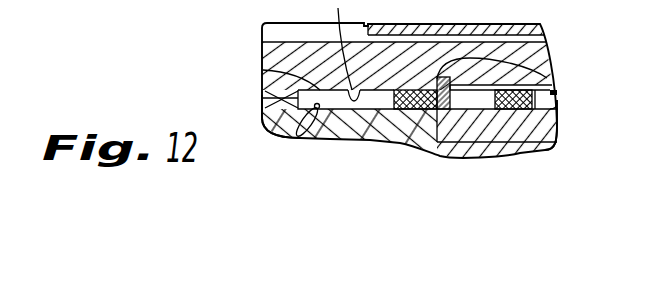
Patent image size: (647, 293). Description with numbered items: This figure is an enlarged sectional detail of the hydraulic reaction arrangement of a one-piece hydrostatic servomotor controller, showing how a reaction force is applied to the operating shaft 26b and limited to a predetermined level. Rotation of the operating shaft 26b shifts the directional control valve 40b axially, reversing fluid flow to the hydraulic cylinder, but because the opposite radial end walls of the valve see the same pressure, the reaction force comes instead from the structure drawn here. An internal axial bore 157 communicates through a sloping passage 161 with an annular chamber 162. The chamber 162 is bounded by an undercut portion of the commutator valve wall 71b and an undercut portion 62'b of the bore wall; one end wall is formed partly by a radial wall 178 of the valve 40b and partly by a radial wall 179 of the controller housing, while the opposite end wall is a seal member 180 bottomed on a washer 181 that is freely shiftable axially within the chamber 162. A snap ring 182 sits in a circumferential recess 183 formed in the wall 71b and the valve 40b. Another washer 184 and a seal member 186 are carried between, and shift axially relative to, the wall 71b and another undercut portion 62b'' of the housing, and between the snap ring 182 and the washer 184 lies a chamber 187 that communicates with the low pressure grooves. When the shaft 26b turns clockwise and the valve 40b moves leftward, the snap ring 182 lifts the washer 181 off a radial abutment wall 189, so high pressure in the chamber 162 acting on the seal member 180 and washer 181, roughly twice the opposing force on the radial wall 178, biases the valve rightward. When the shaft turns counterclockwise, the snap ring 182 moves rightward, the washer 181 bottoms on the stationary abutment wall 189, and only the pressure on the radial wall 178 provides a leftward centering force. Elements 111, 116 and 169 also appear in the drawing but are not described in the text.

The directional control valve 40b is at (552, 42).
The operating shaft 26b is at (447, 29).
The spring wire 116 is at (340, 50).
The radial wall of directional control valve 178 is at (263, 91).
The chamber 162 is at (263, 74).
The radial wall of controller housing 179 is at (265, 117).
The seal member 180 is at (404, 112).
The sloping passage 161 is at (322, 129).
The undercut portion of bore wall 62'b is at (276, 154).
The washer 181 is at (423, 142).
The circumferential recess 183 is at (548, 50).
The snap ring 182 is at (542, 78).
The chamber 187 is at (497, 102).
The washer 184 is at (518, 100).
The commutator valve wall 71b is at (559, 95).
The undercut portion of controller housing 62b'' is at (597, 116).
The radial abutment wall 189 is at (457, 112).
The seal member 186 is at (557, 146).
The element 111 is at (64, 7).
The internal axial bore 157 is at (130, 13).
The element 169 is at (184, 13).